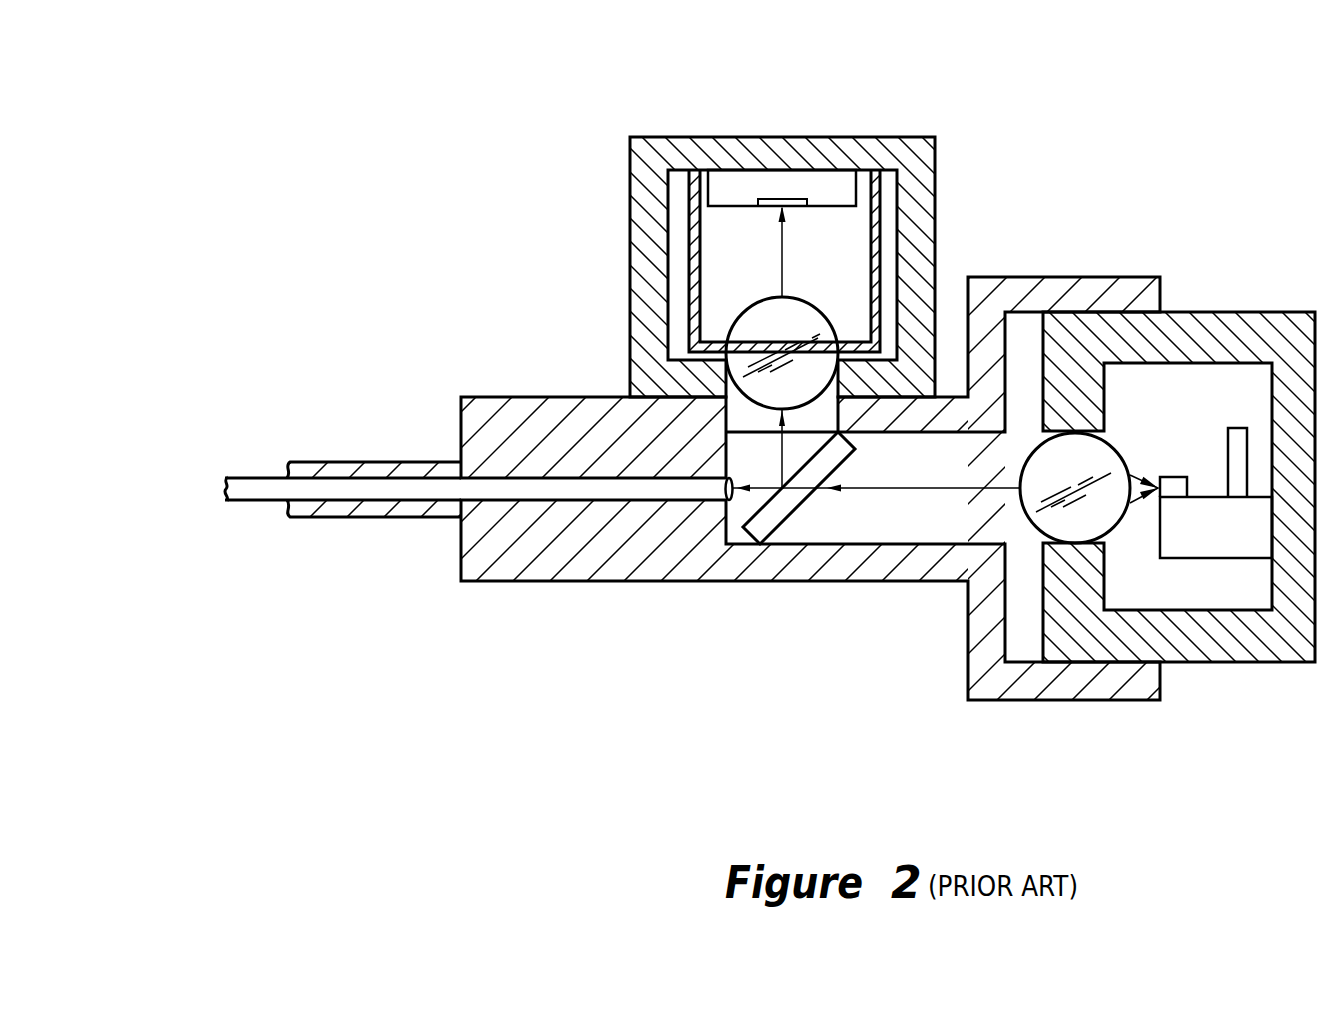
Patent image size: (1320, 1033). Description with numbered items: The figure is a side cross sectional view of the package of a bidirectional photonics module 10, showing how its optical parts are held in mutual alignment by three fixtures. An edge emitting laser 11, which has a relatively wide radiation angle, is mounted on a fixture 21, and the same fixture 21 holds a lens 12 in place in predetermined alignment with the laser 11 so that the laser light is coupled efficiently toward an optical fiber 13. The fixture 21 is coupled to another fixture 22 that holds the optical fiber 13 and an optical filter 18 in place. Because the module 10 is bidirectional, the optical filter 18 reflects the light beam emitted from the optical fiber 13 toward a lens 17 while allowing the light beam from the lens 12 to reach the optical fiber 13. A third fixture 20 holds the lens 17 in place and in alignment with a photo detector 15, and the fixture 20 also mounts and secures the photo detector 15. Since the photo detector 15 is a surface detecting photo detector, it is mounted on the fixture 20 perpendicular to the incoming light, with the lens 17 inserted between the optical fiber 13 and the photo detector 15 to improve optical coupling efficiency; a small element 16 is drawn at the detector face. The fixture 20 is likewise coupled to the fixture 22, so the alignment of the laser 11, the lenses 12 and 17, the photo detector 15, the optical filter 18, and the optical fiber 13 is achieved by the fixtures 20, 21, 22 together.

The photonics module 10 is at (1178, 105).
The edge emitting laser 11 is at (1174, 477).
The lens 12 is at (1116, 445).
The optical fiber 13 is at (245, 478).
The photo detector 15 is at (730, 207).
The photodetector active area 16 is at (819, 200).
The lens 17 is at (762, 295).
The optical filter 18 is at (857, 452).
The fixture 20 is at (868, 137).
The fixture 21 is at (1203, 312).
The fixture 22 is at (622, 582).